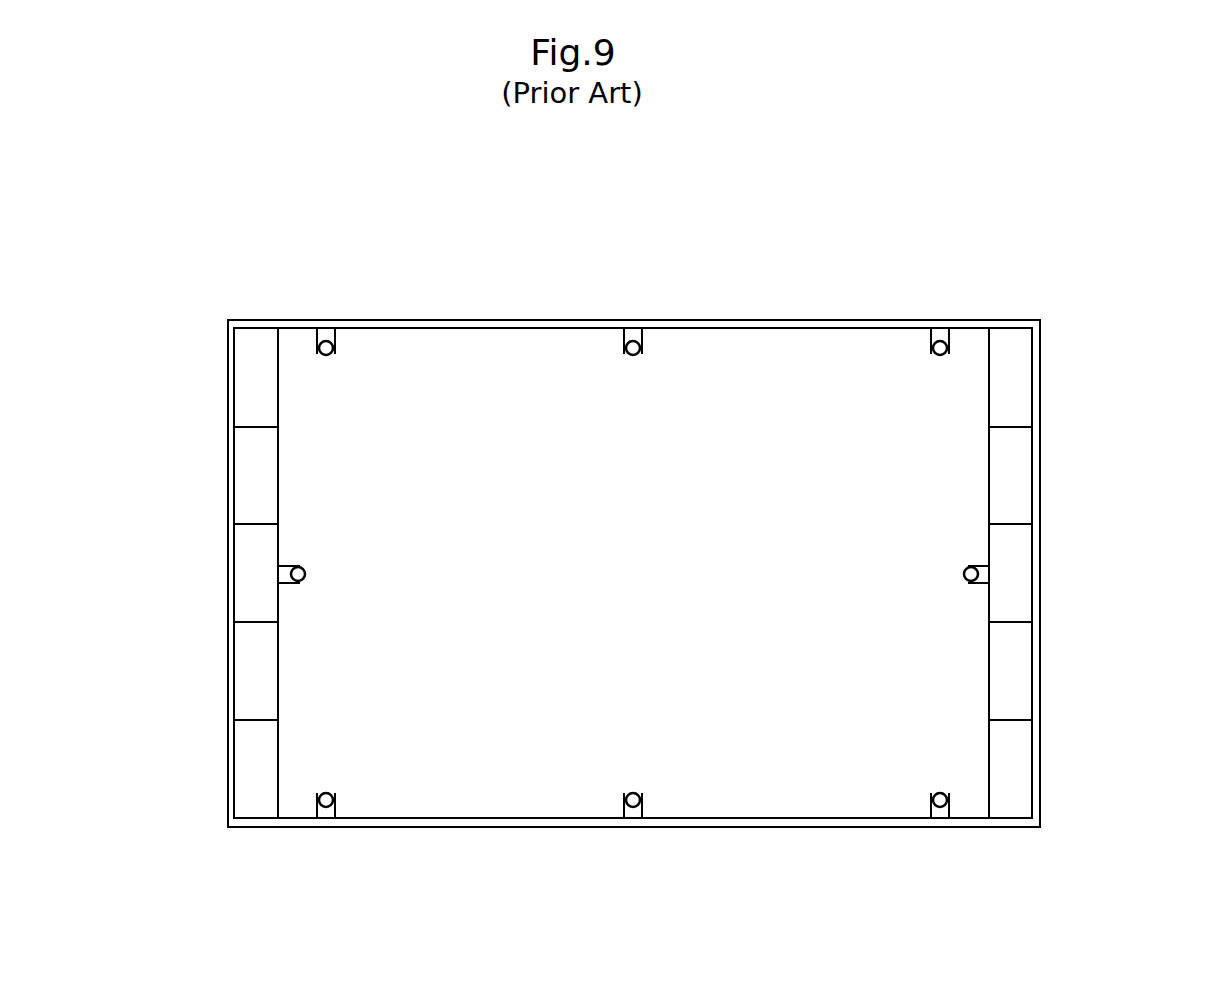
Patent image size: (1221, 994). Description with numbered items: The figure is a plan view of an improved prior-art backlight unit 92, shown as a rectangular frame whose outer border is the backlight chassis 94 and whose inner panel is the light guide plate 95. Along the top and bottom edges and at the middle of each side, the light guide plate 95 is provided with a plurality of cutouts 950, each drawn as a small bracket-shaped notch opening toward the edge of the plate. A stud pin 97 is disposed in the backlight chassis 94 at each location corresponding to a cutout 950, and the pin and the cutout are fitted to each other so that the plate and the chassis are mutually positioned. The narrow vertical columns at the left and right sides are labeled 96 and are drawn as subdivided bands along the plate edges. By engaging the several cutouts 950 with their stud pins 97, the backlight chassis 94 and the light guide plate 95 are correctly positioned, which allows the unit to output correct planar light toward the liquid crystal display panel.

The backlight unit 92 is at (301, 256).
The backlight chassis 94 is at (532, 818).
The light guide plate 95 is at (496, 365).
The side columns / end frame members 96 is at (250, 395).
The stud pin 97 is at (326, 345).
The cutout 950 is at (330, 343).